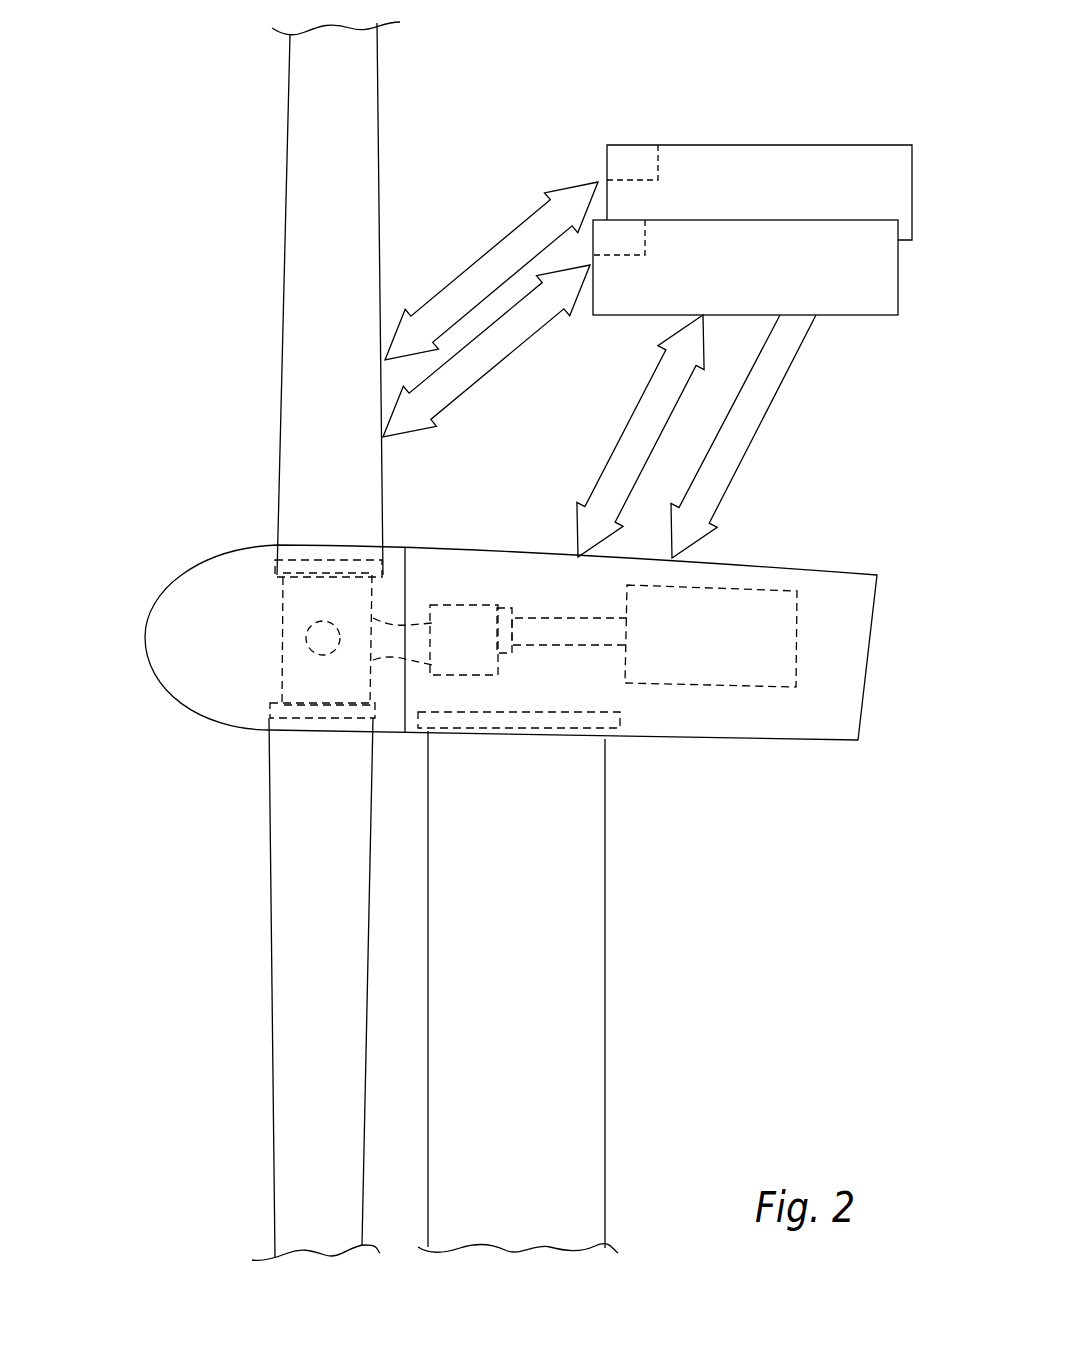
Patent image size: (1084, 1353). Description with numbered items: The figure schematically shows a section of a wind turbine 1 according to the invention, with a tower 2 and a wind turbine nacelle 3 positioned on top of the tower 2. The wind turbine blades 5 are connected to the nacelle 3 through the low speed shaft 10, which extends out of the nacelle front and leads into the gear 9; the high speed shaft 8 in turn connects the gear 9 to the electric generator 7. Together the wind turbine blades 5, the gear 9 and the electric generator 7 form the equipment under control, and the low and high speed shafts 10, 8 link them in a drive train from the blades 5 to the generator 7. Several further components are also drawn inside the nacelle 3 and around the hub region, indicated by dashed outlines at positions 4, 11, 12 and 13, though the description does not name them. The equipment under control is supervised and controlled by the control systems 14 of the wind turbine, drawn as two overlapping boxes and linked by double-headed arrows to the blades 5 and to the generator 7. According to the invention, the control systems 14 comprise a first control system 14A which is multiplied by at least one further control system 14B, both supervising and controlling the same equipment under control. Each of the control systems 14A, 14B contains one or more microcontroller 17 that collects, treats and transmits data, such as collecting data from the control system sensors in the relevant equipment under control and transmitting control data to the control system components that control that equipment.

The wind turbine 1 is at (797, 1023).
The tower 2 is at (585, 1082).
The wind turbine nacelle 3 is at (780, 752).
The hub 4 is at (217, 553).
The wind turbine blades 5 is at (310, 268).
The electric generator 7 is at (740, 598).
The high speed shaft 8 is at (532, 627).
The gear 9 is at (457, 613).
The low speed shaft 10 is at (388, 650).
The pitch bearing 11 is at (318, 636).
The pitch system 12 is at (270, 705).
The yaw system 13 is at (478, 720).
The control systems 14 is at (560, 153).
The first control system 14A is at (860, 297).
The further control system 14B is at (875, 158).
The microcontroller 17 is at (653, 152).